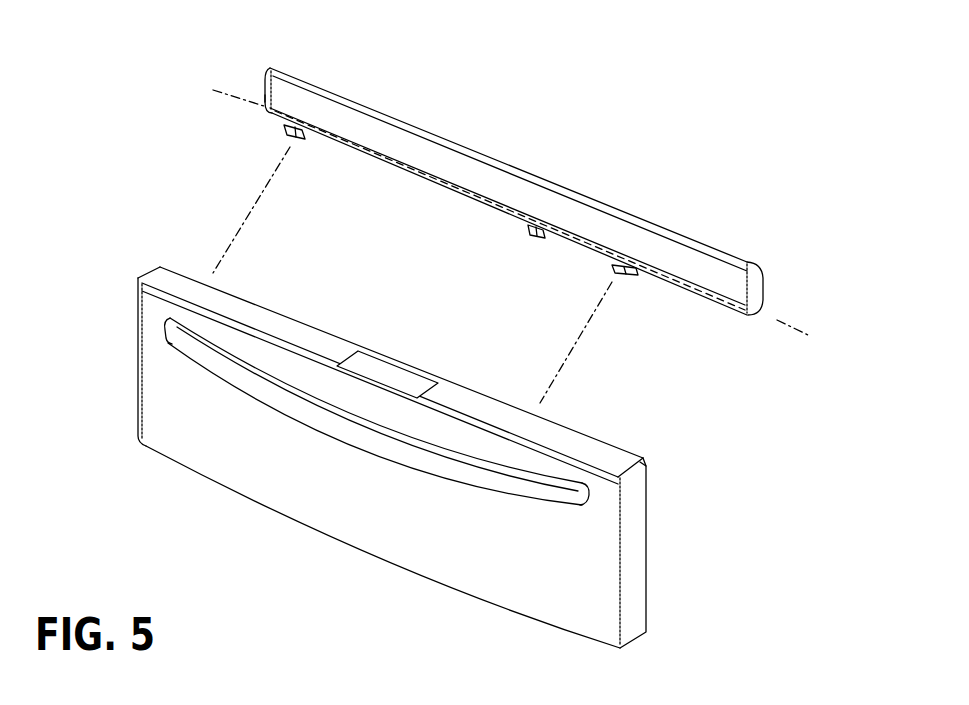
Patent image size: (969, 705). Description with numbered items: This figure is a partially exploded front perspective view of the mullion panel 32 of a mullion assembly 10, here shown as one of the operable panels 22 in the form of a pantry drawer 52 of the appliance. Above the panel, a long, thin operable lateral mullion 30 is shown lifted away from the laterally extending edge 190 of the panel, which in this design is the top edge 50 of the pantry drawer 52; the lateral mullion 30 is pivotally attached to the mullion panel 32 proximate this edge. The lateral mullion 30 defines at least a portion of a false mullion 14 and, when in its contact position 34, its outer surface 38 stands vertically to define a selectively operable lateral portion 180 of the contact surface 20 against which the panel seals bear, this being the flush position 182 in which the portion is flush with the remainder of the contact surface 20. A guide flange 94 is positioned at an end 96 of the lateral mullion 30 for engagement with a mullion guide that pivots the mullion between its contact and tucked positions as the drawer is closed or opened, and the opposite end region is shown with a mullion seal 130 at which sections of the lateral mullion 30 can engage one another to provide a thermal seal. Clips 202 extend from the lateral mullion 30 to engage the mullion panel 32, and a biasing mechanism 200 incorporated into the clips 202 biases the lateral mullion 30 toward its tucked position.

The mullion assembly 10 is at (227, 140).
The false mullion 14 is at (653, 181).
The contact surface 20 is at (362, 130).
The operable panel 22 is at (188, 466).
The lateral mullion 30 is at (703, 238).
The mullion panel 32 is at (632, 553).
The contact position 34 is at (768, 273).
The outer surface 38 is at (447, 167).
The top edge 50 is at (180, 268).
The pantry drawer 52 is at (134, 377).
The guide flange 94 is at (264, 100).
The end 96 is at (277, 67).
The mullion seal 130 is at (753, 293).
The selectively operable lateral portion 180 is at (598, 197).
The flush position 182 is at (458, 131).
The laterally extending edge 190 is at (475, 390).
The biasing mechanism 200 is at (630, 287).
The clip 202 is at (615, 268).